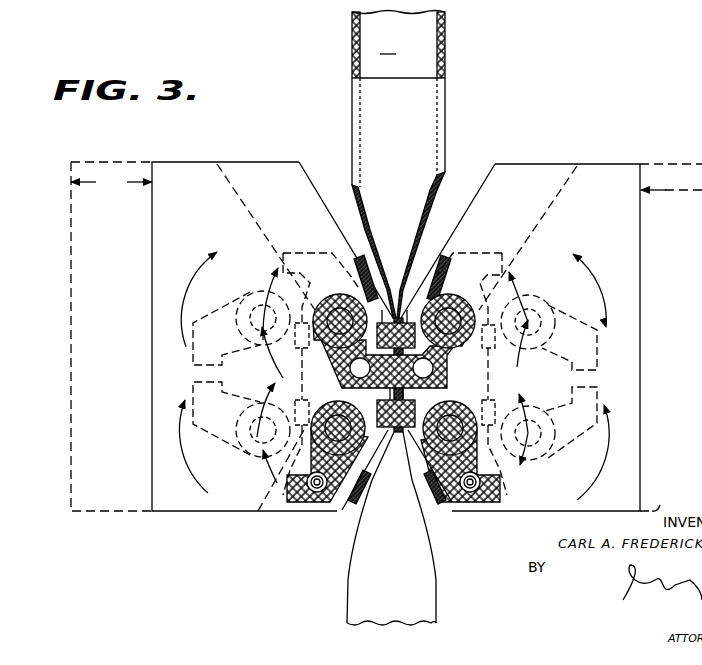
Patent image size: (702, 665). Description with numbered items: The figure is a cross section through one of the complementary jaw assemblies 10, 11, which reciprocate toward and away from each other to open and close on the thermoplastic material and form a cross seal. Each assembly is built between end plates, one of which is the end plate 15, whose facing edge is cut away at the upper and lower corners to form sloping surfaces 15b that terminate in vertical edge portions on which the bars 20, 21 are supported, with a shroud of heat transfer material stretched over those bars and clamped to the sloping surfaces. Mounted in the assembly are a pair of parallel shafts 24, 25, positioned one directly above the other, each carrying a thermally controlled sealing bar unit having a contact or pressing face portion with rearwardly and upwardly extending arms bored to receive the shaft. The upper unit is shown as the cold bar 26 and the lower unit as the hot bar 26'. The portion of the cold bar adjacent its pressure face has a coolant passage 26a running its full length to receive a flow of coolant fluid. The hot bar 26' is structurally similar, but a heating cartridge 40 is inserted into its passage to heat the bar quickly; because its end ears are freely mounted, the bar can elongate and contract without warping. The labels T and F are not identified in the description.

The jaw assembly 10 is at (256, 512).
The jaw assembly 11 is at (521, 466).
The end plate 15 is at (634, 263).
The sloping surface 15b is at (508, 136).
The bar 20 is at (352, 352).
The bar 21 is at (414, 412).
The shaft 24 is at (452, 296).
The shaft 25 is at (443, 512).
The cold bar 26 is at (446, 358).
The hot bar 26' is at (533, 376).
The coolant passage 26a is at (399, 452).
The heating cartridge 40 is at (470, 494).
The tube T is at (446, 100).
The fluid F is at (398, 53).